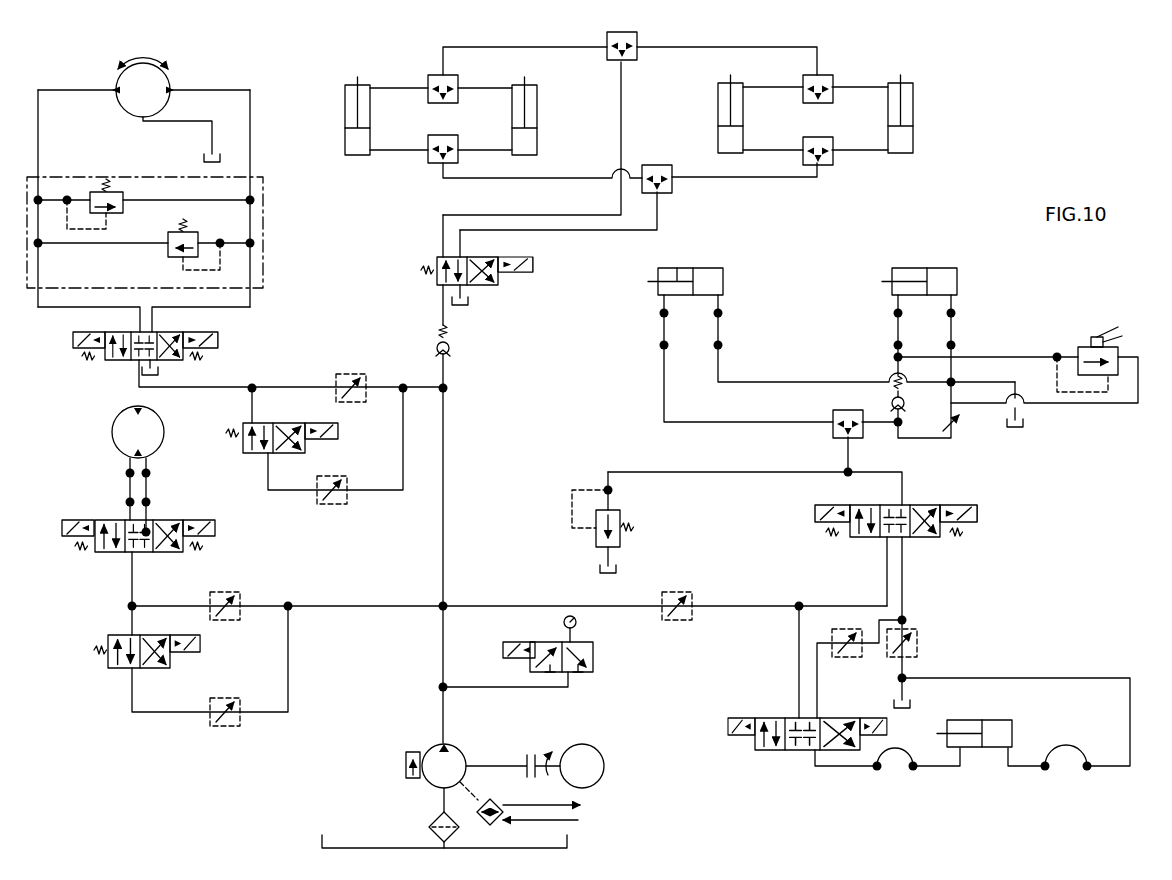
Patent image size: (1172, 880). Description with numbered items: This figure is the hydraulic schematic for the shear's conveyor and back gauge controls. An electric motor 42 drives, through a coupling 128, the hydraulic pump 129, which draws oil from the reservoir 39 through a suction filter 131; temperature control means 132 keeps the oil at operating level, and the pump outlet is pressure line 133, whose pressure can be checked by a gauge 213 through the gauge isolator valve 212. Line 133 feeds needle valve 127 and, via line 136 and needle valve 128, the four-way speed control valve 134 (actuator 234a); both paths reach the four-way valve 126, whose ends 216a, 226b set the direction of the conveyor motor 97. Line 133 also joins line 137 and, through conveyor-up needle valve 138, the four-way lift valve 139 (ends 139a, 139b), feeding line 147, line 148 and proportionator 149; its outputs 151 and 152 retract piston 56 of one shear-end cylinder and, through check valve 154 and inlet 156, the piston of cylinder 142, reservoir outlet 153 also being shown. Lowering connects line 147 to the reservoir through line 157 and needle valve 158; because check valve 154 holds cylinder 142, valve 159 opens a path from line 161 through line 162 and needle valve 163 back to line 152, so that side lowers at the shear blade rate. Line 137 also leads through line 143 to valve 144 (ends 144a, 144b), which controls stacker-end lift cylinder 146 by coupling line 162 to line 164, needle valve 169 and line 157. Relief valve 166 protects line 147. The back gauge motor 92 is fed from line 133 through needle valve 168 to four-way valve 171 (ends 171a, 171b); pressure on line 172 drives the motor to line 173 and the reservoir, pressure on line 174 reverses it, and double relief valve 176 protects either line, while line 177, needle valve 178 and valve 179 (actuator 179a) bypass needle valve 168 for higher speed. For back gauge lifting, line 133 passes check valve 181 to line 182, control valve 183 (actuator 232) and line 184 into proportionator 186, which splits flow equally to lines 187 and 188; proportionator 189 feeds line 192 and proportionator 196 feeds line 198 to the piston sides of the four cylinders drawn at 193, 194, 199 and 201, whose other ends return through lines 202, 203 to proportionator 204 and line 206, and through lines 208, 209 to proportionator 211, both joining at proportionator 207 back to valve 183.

The hydraulic motor 92 is at (165, 80).
The line 173 is at (180, 121).
The line 174 is at (250, 160).
The reservoir 39 is at (205, 160).
The double relief valve 176 is at (263, 243).
The 4-way control valve 171 is at (218, 338).
The solenoid 171a is at (218, 345).
The solenoid 171b is at (80, 350).
The line 172 is at (60, 308).
The hydraulic conveyor motor 97 is at (112, 440).
The 4-way valve 126 is at (165, 520).
The solenoid 216a is at (213, 530).
The solenoid 226b is at (62, 530).
The needle valve 127 is at (225, 620).
The conveyor speed control valve 134 is at (110, 668).
The solenoid 234a is at (195, 653).
The needle valve 128 is at (218, 725).
The line 136 is at (290, 665).
The needle valve 168 is at (358, 378).
The valve 179 is at (242, 450).
The solenoid 179a is at (338, 430).
The line 177 is at (403, 465).
The needle valve 178 is at (330, 500).
The hydraulic line 133 is at (443, 560).
The line 182 is at (443, 307).
The check valve 181 is at (450, 345).
The control valve 183 is at (483, 257).
The solenoid 232 is at (525, 272).
The hydraulic cylinder 199 is at (362, 83).
The hydraulic cylinder 201 is at (538, 100).
The proportionator 196 is at (458, 80).
The line 198 is at (478, 90).
The proportionator 211 is at (440, 165).
The line 208 is at (480, 152).
The line 209 is at (395, 155).
The line 188 is at (545, 47).
The proportionator 186 is at (637, 42).
The line 184 is at (622, 105).
The gauge isolator valve 212 is at (558, 178).
The pressure gauge 213 is at (563, 622).
The line 187 is at (735, 47).
The proportionator 189 is at (822, 75).
The line 192 is at (855, 87).
The hydraulic cylinder 193 is at (745, 117).
The hydraulic cylinder 194 is at (915, 100).
The line 203 is at (850, 150).
The line 202 is at (790, 150).
The proportionator 204 is at (825, 163).
The line 206 is at (740, 180).
The proportionator 207 is at (657, 165).
The piston 56 is at (677, 270).
The proportionator output 152 is at (705, 268).
The reservoir outlet 153 is at (722, 305).
The inlet 156 is at (895, 305).
The proportionator 149 is at (845, 410).
The proportionator output 151 is at (793, 422).
The line 148 is at (848, 455).
The line 147 is at (670, 472).
The conveyor lift cylinder 142 is at (965, 268).
The check valve 154 is at (955, 305).
The line 161 is at (1020, 357).
The valve 159 is at (1098, 337).
The line 162 is at (1080, 405).
The needle valve 163 is at (958, 428).
The pressure relief valve 166 is at (622, 515).
The line 137 is at (556, 606).
The conveyor up needle valve 138 is at (690, 615).
The conveyor up or down 4-way valve 139 is at (977, 510).
The solenoid 139a is at (977, 530).
The solenoid 139b is at (815, 512).
The line 157 is at (905, 590).
The needle valve 158 is at (918, 643).
The needle valve 169 is at (850, 628).
The line 143 is at (799, 630).
The valve 144 is at (770, 718).
The solenoid 144a is at (875, 735).
The solenoid 144b is at (728, 735).
The line 164 is at (818, 705).
The conveyor lift cylinder 146 is at (975, 720).
The hydraulic pump 129 is at (428, 745).
The motor 42 is at (604, 760).
The suction filter 131 is at (430, 822).
The heat exchange or temperature control means 132 is at (492, 803).